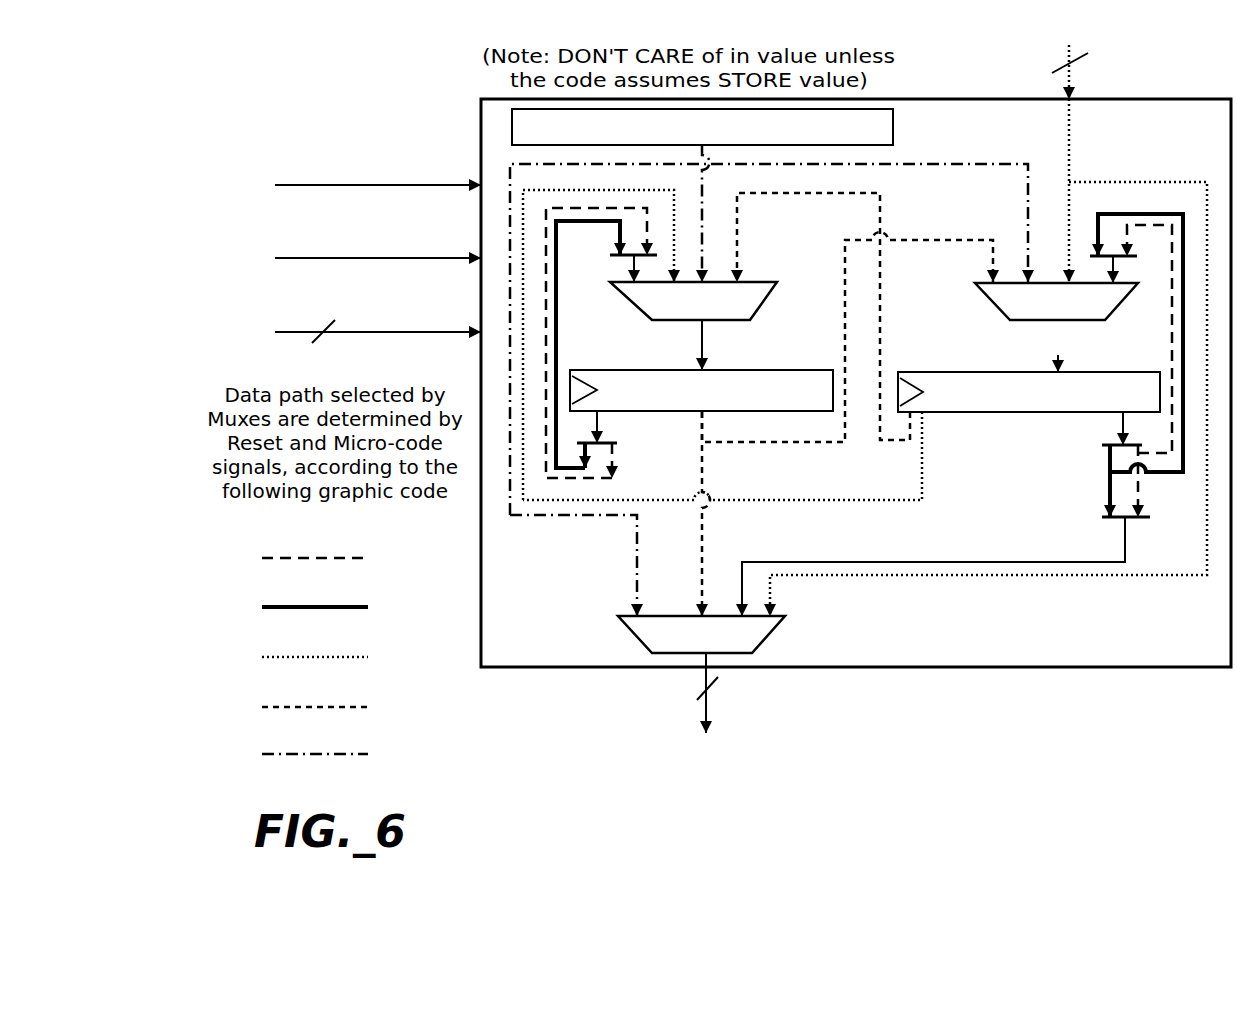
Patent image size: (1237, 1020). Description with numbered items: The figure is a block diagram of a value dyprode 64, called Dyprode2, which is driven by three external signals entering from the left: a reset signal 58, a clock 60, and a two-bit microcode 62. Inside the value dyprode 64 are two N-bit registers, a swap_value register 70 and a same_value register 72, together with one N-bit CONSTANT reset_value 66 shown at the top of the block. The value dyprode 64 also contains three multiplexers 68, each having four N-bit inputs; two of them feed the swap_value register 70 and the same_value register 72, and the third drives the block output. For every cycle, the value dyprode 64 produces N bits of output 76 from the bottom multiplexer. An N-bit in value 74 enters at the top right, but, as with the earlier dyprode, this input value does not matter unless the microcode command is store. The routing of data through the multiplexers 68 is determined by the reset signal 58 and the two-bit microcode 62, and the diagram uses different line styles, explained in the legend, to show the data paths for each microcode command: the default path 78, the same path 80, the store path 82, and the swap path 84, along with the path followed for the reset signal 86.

The reset signal 58 is at (285, 185).
The clock 60 is at (285, 258).
The 2-bit microcode 62 is at (285, 332).
The value dyprode 64 is at (1022, 668).
The CONSTANT reset_value 66 is at (895, 128).
The multiplexer 68 is at (765, 297).
The swap_value register 70 is at (690, 412).
The same_value register 72 is at (1022, 412).
The N-bit in value 74 is at (1075, 73).
The N-bit output 76 is at (708, 695).
The default data path 78 is at (262, 558).
The same data path 80 is at (262, 607).
The store data path 82 is at (262, 657).
The swap data path 84 is at (262, 707).
The reset signal data path 86 is at (262, 754).